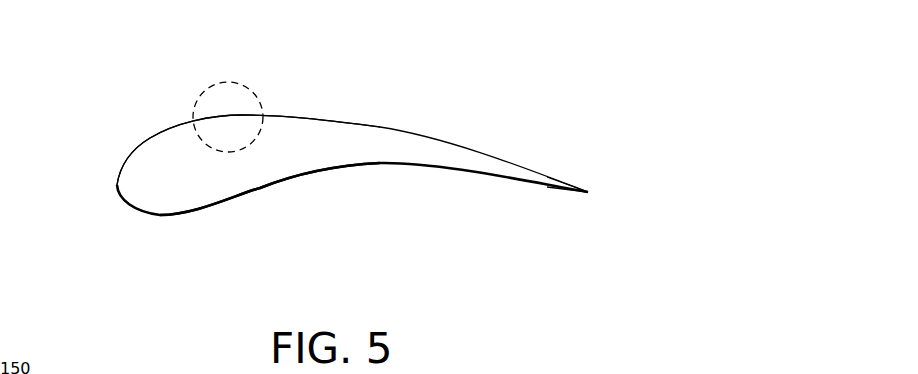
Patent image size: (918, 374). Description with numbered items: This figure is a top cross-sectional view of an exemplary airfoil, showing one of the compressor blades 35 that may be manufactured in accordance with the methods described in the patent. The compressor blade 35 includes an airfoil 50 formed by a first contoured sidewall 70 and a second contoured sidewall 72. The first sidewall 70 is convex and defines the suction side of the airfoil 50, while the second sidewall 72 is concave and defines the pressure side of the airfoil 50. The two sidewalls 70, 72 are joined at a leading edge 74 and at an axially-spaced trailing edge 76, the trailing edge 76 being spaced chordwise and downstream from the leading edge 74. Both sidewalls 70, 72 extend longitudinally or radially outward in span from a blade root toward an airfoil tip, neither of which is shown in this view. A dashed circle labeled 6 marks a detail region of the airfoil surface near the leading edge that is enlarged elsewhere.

The detail region shown in FIG. 6 is at (240, 85).
The compressor blade 35 is at (478, 64).
The airfoil 50 is at (414, 127).
The first contoured sidewall 70 is at (308, 118).
The second contoured sidewall 72 is at (300, 178).
The leading edge 74 is at (118, 193).
The trailing edge 76 is at (588, 193).